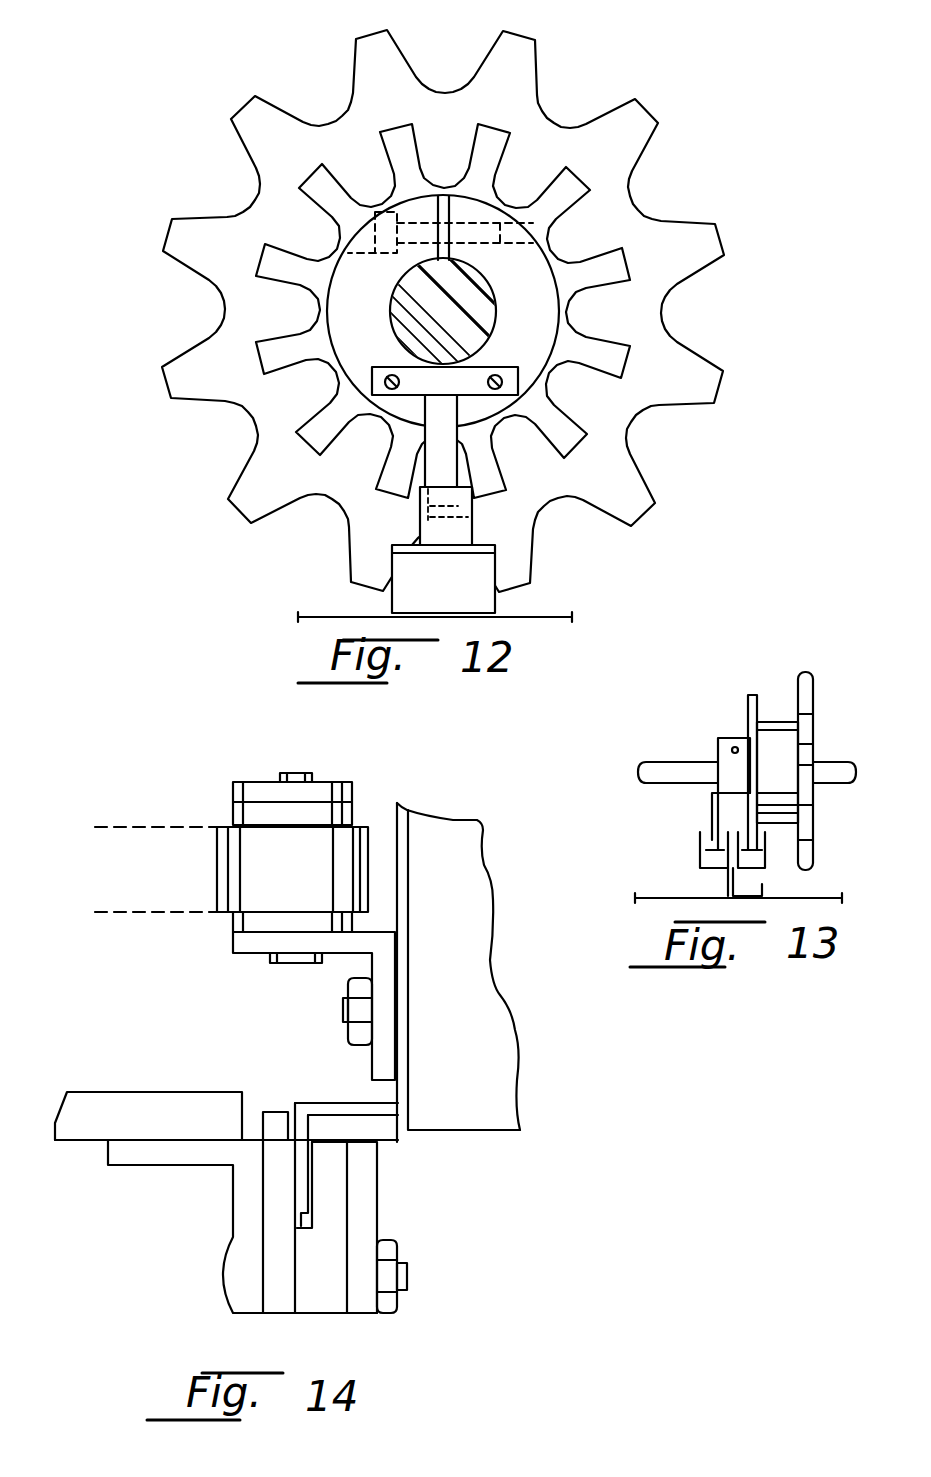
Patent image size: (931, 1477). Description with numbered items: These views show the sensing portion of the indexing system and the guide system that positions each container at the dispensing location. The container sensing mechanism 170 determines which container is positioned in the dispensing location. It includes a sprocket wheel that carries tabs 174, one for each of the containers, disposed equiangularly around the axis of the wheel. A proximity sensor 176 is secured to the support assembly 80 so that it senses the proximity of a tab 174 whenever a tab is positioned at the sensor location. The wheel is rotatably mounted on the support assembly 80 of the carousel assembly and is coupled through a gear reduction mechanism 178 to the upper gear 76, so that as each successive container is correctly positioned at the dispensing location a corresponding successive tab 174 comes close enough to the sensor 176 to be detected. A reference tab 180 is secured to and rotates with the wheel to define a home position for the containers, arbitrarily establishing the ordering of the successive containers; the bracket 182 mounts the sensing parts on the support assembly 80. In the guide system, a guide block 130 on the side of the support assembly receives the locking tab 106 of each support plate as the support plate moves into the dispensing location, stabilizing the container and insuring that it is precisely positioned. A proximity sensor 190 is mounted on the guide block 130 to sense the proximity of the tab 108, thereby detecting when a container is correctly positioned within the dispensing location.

In FIG. 12, the upper gear 76 is at (646, 218).
In FIG. 13, the upper gear 76 is at (814, 702).
In FIG. 12, the tabs 174 is at (407, 132).
In FIG. 12, the container sensing mechanism 170 is at (274, 334).
In FIG. 13, the container sensing mechanism 170 is at (750, 707).
In FIG. 12, the reference tab 180 is at (448, 453).
In FIG. 13, the reference tab 180 is at (713, 800).
In FIG. 12, the bracket 182 is at (448, 527).
In FIG. 13, the bracket 182 is at (700, 852).
In FIG. 12, the support assembly 80 is at (541, 616).
In FIG. 14, the support assembly 80 is at (105, 1092).
In FIG. 13, the gear reduction mechanism 178 is at (773, 722).
In FIG. 13, the proximity sensor 176 is at (764, 854).
In FIG. 14, the proximity sensor 190 is at (270, 1112).
In FIG. 14, the tab 108 is at (398, 1096).
In FIG. 14, the locking tab 106 is at (309, 1138).
In FIG. 14, the guide block 130 is at (372, 1172).